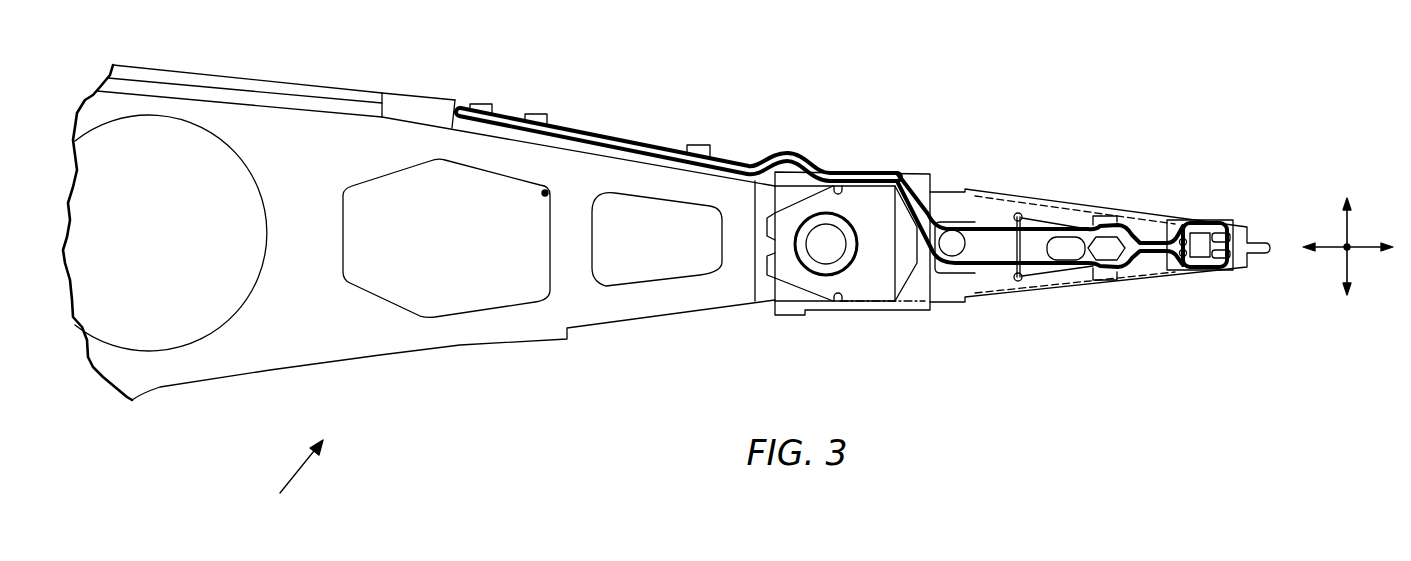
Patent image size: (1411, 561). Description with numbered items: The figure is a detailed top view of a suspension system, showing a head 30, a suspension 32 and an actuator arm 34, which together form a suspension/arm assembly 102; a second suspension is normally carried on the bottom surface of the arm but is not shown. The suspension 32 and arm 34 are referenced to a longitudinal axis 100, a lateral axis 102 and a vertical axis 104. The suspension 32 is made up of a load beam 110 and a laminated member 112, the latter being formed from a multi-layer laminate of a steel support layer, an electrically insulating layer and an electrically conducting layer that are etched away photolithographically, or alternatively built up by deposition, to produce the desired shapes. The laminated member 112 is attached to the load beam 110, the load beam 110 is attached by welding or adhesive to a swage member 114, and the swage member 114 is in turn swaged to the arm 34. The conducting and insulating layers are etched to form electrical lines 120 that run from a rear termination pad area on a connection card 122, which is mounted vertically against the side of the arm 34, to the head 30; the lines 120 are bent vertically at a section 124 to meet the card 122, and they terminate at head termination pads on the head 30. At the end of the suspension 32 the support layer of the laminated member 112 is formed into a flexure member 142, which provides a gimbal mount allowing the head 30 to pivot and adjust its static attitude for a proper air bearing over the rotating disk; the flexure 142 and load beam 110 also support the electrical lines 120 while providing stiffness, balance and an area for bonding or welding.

The head 30 is at (1200, 250).
The suspension 32 is at (1017, 297).
The actuator arm 34 is at (373, 358).
The longitudinal axis 100 is at (1322, 245).
The suspension/arm assembly 102 is at (1377, 225).
The vertical axis 104 is at (1345, 252).
The load beam 110 is at (992, 200).
The laminated member 112 is at (1150, 223).
The swage member 114 is at (827, 290).
The electrical lines 120 is at (863, 170).
The connection card 122 is at (285, 82).
The section 124 is at (427, 97).
The flexure member 142 is at (1145, 267).